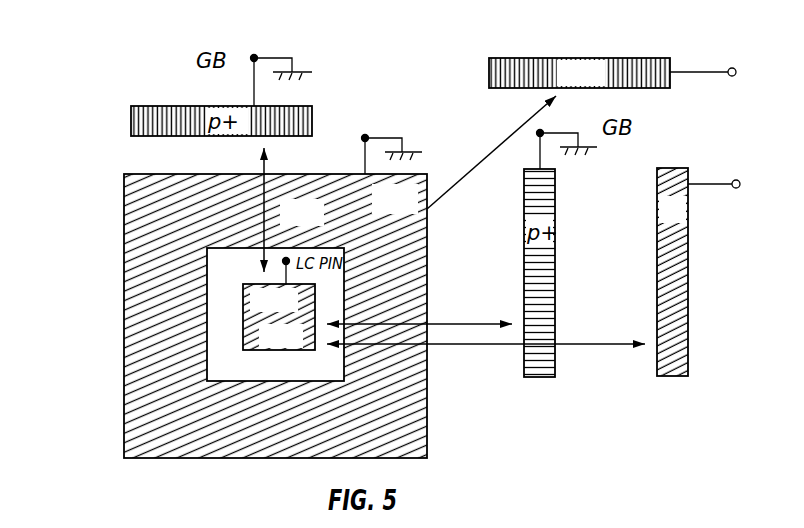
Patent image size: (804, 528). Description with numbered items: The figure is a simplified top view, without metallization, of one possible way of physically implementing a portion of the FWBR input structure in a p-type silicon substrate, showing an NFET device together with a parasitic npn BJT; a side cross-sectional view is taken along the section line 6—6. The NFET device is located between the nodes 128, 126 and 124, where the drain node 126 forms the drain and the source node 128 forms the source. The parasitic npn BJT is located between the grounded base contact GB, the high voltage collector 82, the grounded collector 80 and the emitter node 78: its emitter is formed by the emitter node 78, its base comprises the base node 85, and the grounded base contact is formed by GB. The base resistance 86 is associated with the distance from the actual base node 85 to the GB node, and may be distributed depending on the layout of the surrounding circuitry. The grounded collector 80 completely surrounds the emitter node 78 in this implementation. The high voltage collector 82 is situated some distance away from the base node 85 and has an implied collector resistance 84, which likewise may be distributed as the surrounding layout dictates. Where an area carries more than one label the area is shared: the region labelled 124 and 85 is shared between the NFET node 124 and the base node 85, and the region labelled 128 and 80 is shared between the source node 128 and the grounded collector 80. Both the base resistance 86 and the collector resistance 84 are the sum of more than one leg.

The section line 6— 6 is at (120, 325).
The emitter node 78 is at (234, 360).
The grounded collector 80 is at (303, 316).
The high voltage collector 82 is at (637, 196).
The collector resistance 84 is at (486, 238).
The base node 85 is at (343, 376).
The base resistance 86 is at (388, 235).
The NFET node 124 is at (251, 274).
The drain node 126 is at (291, 311).
The source node 128 is at (413, 210).